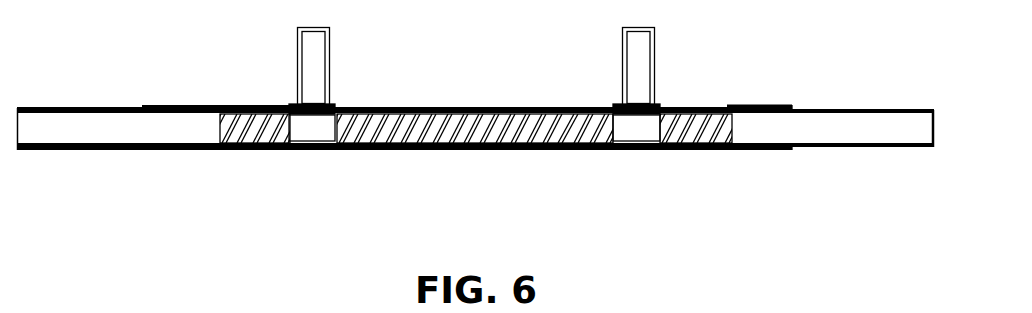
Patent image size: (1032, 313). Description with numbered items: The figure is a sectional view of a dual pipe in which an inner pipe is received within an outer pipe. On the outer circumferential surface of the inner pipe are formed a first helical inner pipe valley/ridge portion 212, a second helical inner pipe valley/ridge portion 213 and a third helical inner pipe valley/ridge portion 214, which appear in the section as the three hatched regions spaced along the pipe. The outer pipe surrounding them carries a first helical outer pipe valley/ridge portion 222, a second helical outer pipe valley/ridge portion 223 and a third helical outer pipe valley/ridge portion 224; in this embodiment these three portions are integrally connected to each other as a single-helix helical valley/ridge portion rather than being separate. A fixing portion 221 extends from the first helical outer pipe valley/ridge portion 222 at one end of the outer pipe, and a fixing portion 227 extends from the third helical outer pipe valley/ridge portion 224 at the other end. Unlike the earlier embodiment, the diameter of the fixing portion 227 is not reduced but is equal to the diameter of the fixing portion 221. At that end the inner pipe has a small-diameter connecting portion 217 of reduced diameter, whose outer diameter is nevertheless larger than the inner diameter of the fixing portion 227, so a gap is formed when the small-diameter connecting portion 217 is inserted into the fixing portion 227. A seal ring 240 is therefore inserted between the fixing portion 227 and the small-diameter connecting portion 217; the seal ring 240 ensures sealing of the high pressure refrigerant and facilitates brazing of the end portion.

The first helical inner pipe valley/ridge portion 212 is at (245, 152).
The second helical inner pipe valley/ridge portion 213 is at (423, 152).
The third helical inner pipe valley/ridge portion 214 is at (690, 152).
The small-diameter connecting portion 217 is at (875, 147).
The fixing portion 221 is at (157, 106).
The first helical outer pipe valley/ridge portion 222 is at (257, 107).
The second helical outer pipe valley/ridge portion 223 is at (413, 105).
The third helical outer pipe valley/ridge portion 224 is at (697, 108).
The fixing portion 227 is at (740, 105).
The seal ring 240 is at (794, 110).